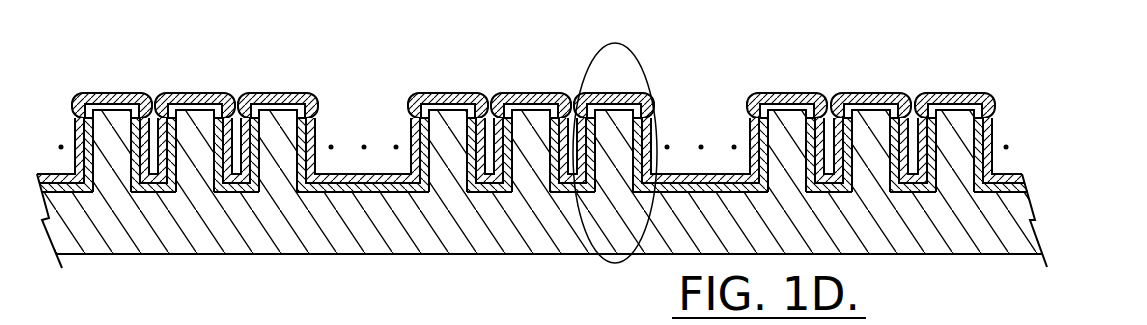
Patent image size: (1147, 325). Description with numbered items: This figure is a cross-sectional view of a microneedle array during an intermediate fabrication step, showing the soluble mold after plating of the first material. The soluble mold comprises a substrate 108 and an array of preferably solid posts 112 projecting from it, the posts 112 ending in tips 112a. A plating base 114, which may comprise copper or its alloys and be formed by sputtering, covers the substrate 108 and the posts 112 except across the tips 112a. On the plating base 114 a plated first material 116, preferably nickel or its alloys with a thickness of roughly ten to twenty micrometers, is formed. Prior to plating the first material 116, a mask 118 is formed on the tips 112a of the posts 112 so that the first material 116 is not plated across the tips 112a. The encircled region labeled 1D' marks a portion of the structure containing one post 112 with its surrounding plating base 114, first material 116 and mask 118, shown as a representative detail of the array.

The substrate 108 is at (232, 254).
The posts 112 is at (787, 122).
The tips 112a is at (873, 115).
The plating base 114 is at (1028, 192).
The plated first material 116 is at (1008, 178).
The mask 118 is at (947, 95).
The detail region 1D' is at (596, 153).